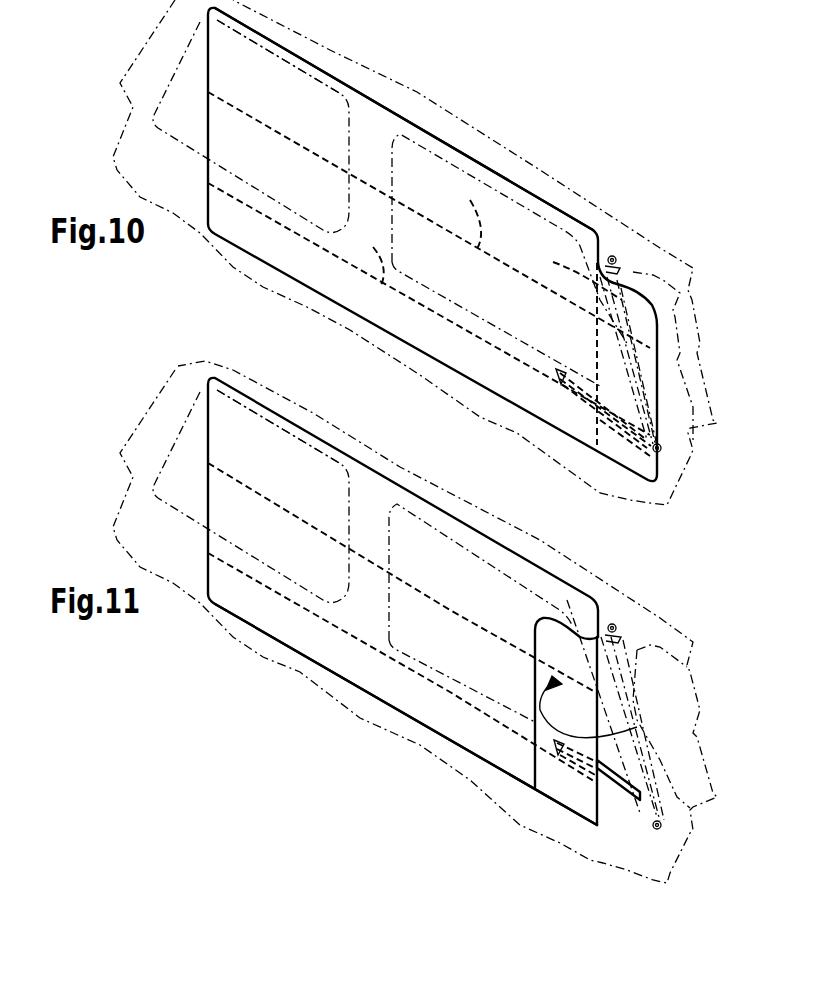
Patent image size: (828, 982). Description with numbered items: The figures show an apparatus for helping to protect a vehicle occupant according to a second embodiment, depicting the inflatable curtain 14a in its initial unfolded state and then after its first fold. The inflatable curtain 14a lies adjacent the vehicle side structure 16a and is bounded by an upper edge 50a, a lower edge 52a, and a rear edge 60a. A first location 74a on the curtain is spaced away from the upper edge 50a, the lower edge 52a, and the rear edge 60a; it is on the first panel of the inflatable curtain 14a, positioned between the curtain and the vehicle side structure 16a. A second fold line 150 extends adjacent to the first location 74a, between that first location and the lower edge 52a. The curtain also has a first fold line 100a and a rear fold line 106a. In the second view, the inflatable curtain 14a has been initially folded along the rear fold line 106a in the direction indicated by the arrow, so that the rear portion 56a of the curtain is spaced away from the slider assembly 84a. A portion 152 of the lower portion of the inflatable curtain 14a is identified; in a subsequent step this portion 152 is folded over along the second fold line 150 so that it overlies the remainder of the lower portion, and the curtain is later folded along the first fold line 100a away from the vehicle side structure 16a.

In FIG. 10, the inflatable curtain 14a is at (292, 93).
In FIG. 11, the inflatable curtain 14a is at (378, 488).
In FIG. 10, the vehicle side structure 16a is at (410, 102).
In FIG. 11, the vehicle side structure 16a is at (336, 424).
In FIG. 10, the upper edge 50a is at (448, 140).
In FIG. 10, the lower edge 52a is at (380, 327).
In FIG. 11, the rear portion 56a is at (563, 787).
In FIG. 10, the rear edge 60a is at (658, 382).
In FIG. 10, the first location 74a is at (560, 373).
In FIG. 11, the first location 74a is at (560, 743).
In FIG. 10, the slider assembly 84a is at (620, 273).
In FIG. 11, the slider assembly 84a is at (623, 700).
In FIG. 10, the first fold line 100a is at (429, 220).
In FIG. 11, the first fold line 100a is at (380, 560).
In FIG. 10, the rear fold line 106a is at (568, 269).
In FIG. 10, the second fold line 150 is at (429, 309).
In FIG. 11, the second fold line 150 is at (367, 647).
In FIG. 11, the portion 152 is at (415, 695).